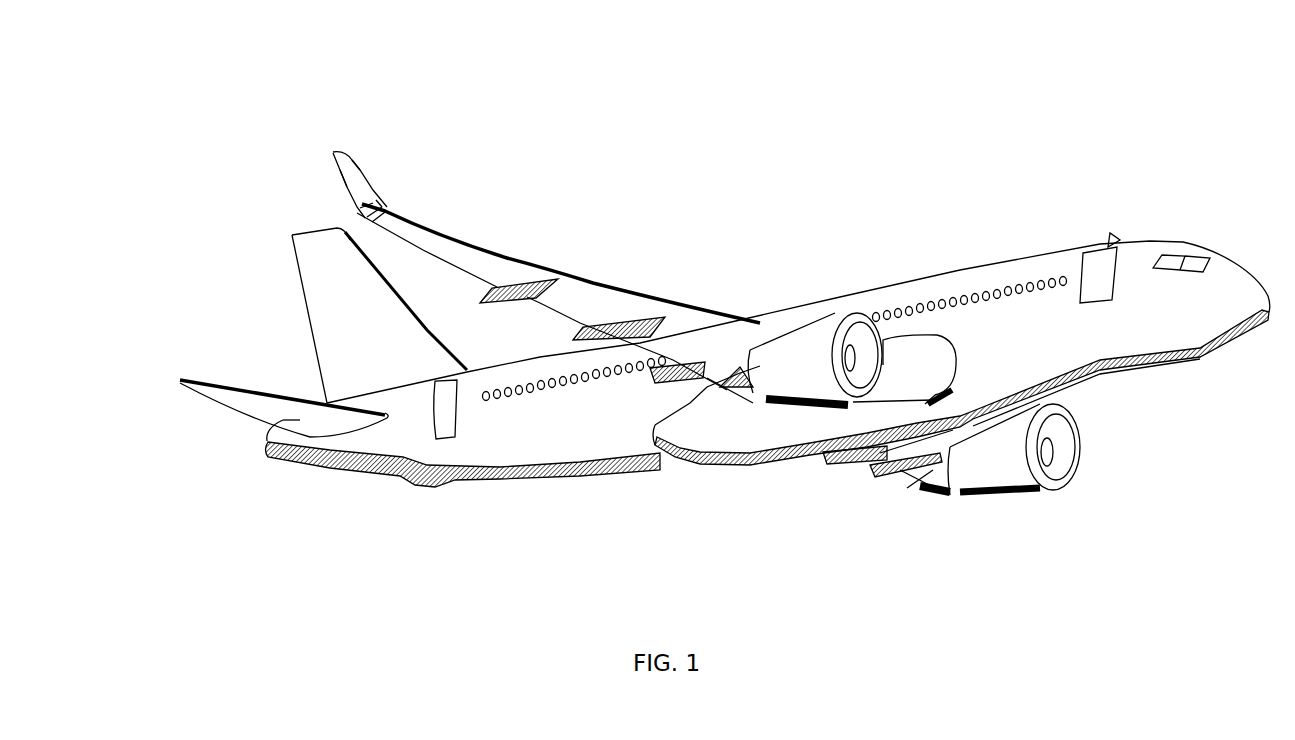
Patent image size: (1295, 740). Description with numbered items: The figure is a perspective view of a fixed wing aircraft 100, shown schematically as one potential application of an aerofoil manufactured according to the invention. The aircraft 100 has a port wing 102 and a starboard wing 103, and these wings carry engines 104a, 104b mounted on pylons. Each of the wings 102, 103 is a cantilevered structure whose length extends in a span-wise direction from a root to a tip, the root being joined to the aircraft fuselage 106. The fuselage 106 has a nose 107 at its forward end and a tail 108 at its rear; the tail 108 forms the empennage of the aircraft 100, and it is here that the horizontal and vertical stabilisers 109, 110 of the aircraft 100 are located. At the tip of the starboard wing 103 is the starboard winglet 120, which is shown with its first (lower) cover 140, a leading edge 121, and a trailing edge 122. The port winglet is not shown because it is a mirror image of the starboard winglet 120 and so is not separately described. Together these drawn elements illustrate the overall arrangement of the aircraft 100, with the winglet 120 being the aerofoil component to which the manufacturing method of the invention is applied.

The fixed wing aircraft 100 is at (814, 65).
The port wing 102 is at (899, 470).
The starboard wing 103 is at (597, 285).
The engine 104a is at (1040, 488).
The engine 104b is at (801, 328).
The aircraft fuselage 106 is at (660, 461).
The nose 107 is at (1202, 353).
The tail 108 is at (350, 463).
The horizontal stabiliser 109 is at (296, 256).
The vertical stabiliser 110 is at (200, 387).
The starboard winglet 120 is at (333, 150).
The leading edge 121 is at (364, 177).
The trailing edge 122 is at (346, 188).
The first (lower) cover 140 is at (342, 172).